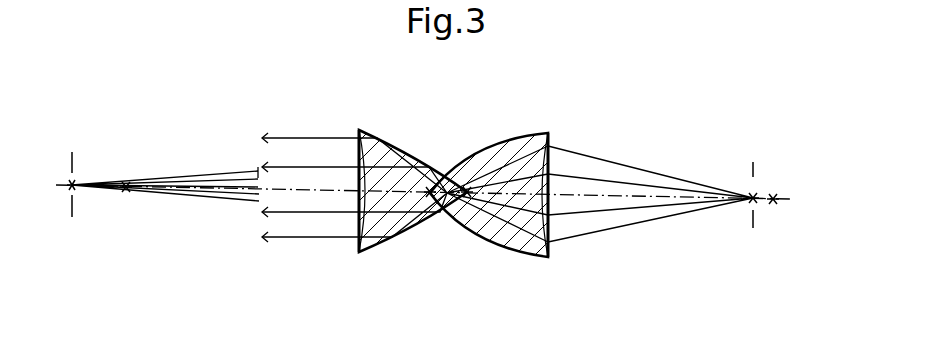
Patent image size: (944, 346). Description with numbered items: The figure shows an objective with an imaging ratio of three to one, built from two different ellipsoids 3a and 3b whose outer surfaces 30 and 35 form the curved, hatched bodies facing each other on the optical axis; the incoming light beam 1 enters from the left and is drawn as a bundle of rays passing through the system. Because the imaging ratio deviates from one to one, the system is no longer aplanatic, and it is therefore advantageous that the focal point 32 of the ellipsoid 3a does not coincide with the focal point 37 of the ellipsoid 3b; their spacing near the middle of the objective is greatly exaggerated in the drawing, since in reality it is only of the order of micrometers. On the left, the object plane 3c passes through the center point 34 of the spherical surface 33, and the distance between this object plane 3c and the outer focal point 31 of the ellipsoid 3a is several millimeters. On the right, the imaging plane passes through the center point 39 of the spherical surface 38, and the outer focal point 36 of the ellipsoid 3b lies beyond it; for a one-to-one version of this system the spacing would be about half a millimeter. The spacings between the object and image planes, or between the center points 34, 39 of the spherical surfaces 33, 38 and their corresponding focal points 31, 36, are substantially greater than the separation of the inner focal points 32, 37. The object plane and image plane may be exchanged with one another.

The light beam 1 is at (280, 192).
The ellipsoid 3a is at (408, 153).
The ellipsoid 3b is at (490, 152).
The object plane 3c is at (73, 163).
The outer surface 30 is at (394, 248).
The outer focal point 31 is at (126, 196).
The focal point 32 is at (421, 198).
The spherical surface 33 is at (372, 128).
The center point 34 is at (76, 192).
The outer surface 35 is at (527, 256).
The outer focal point 36 is at (777, 190).
The focal point 37 is at (467, 198).
The spherical surface 38 is at (550, 157).
The center point 39 is at (755, 203).